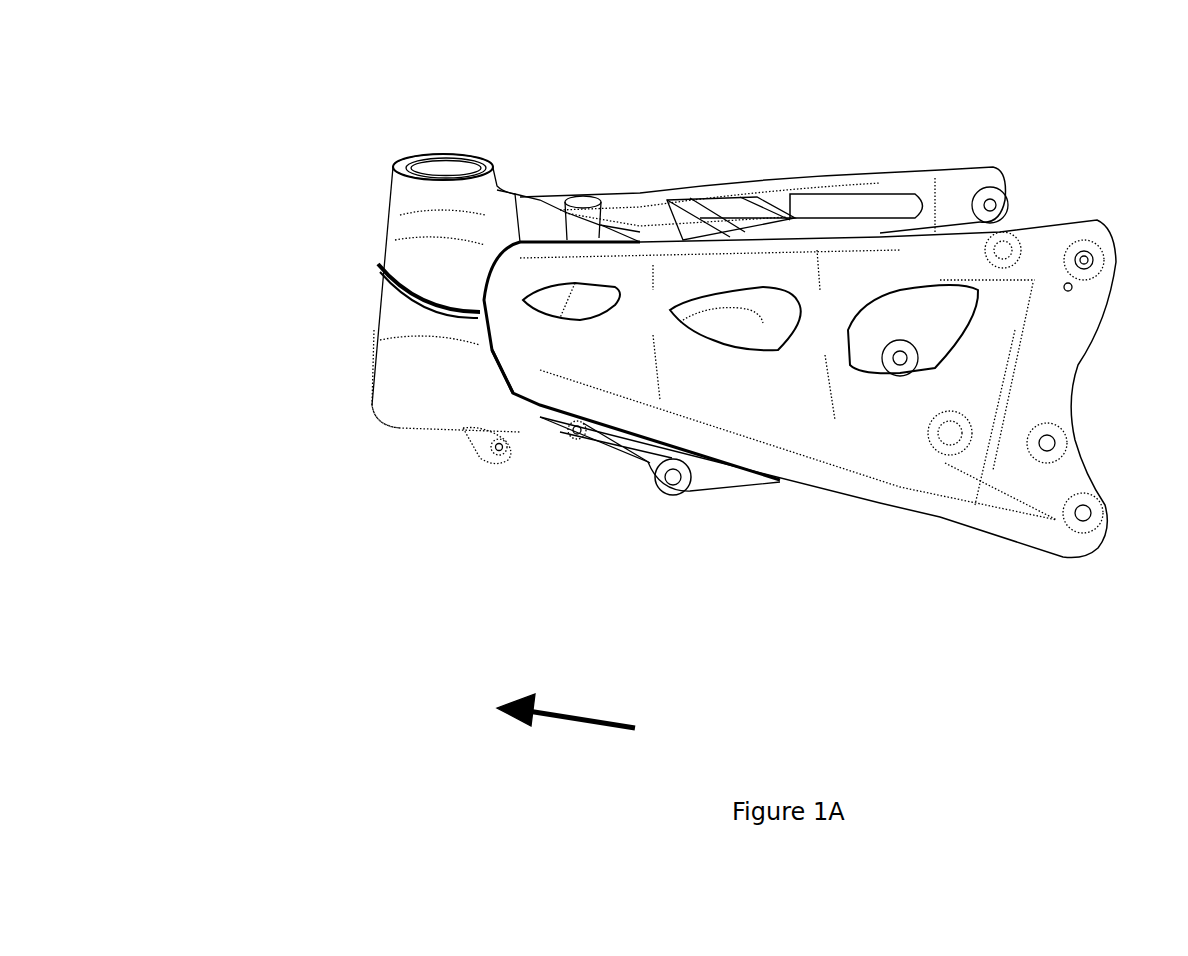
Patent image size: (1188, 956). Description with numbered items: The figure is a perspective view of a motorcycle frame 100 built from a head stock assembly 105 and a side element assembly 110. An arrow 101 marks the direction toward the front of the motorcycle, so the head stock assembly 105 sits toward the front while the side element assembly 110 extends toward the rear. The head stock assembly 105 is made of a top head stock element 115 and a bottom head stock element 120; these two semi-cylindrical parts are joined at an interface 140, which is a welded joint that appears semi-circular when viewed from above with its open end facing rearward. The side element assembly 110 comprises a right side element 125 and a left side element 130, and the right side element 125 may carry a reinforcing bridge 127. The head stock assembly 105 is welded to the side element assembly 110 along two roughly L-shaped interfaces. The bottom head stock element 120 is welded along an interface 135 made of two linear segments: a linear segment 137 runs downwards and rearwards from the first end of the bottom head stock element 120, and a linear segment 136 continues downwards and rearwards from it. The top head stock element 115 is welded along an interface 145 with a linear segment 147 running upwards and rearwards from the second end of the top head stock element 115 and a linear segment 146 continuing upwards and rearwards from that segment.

The motorcycle frame 100 is at (438, 772).
The arrow 101 is at (582, 717).
The head stock assembly 105 is at (396, 153).
The side element assembly 110 is at (942, 167).
The top head stock element 115 is at (440, 242).
The bottom head stock element 120 is at (385, 369).
The right side element 125 is at (810, 180).
The reinforcing bridge 127 is at (732, 232).
The left side element 130 is at (855, 485).
The interface 135 is at (497, 365).
The linear segment 136 is at (623, 427).
The linear segment 137 is at (492, 357).
The interface 140 is at (436, 312).
The interface 145 is at (565, 246).
The linear segment 146 is at (615, 246).
The linear segment 147 is at (505, 250).